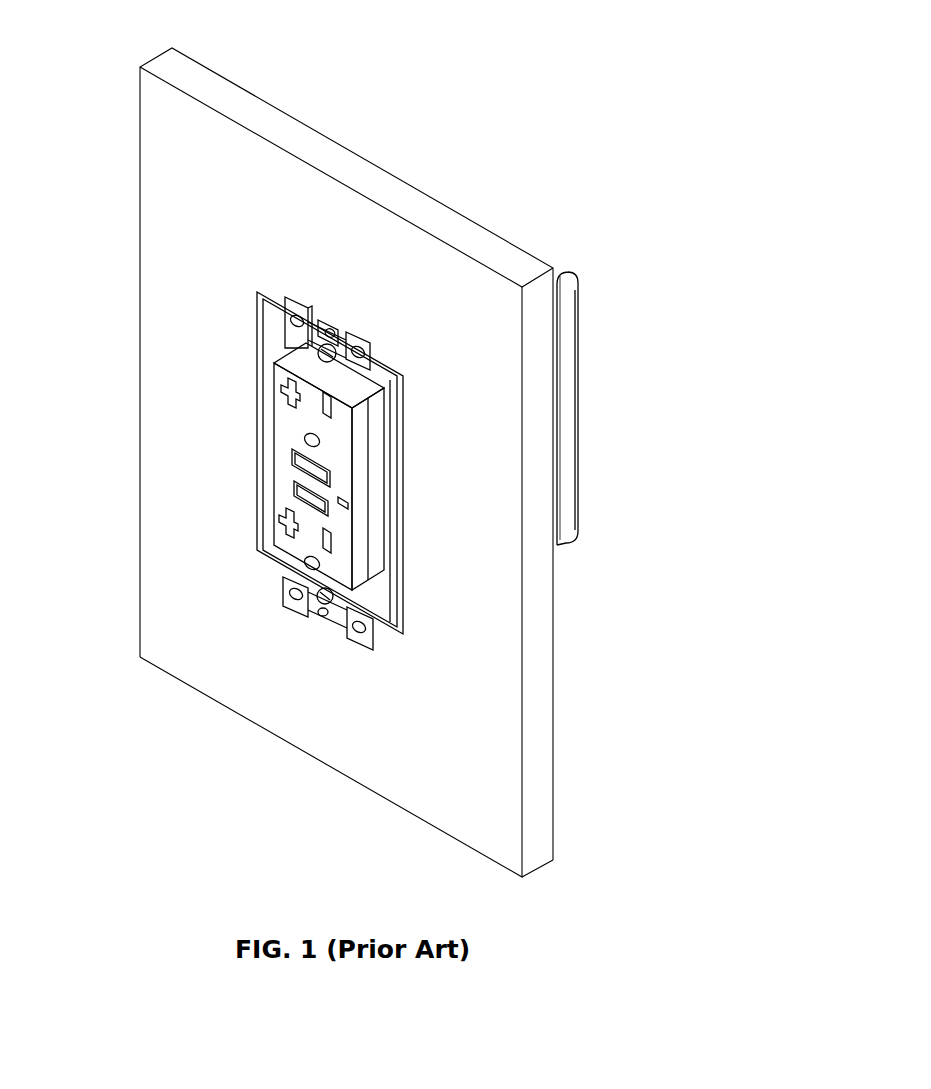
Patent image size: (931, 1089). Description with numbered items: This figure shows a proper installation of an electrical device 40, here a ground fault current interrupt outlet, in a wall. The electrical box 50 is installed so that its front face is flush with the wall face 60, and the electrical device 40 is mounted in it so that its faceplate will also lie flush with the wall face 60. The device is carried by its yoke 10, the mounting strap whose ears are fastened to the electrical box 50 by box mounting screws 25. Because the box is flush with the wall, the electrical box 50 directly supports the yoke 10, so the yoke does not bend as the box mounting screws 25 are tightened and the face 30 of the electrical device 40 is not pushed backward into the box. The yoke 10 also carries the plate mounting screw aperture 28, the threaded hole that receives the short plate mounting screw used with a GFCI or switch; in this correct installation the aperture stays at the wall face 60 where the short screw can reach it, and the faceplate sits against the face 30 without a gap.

The yoke 10 is at (297, 298).
The box mounting screws 25 is at (325, 350).
The plate mounting screw aperture 28 is at (322, 323).
The face 30 is at (335, 452).
The electrical device 40 is at (357, 565).
The electrical box 50 is at (600, 431).
The wall face 60 is at (457, 300).